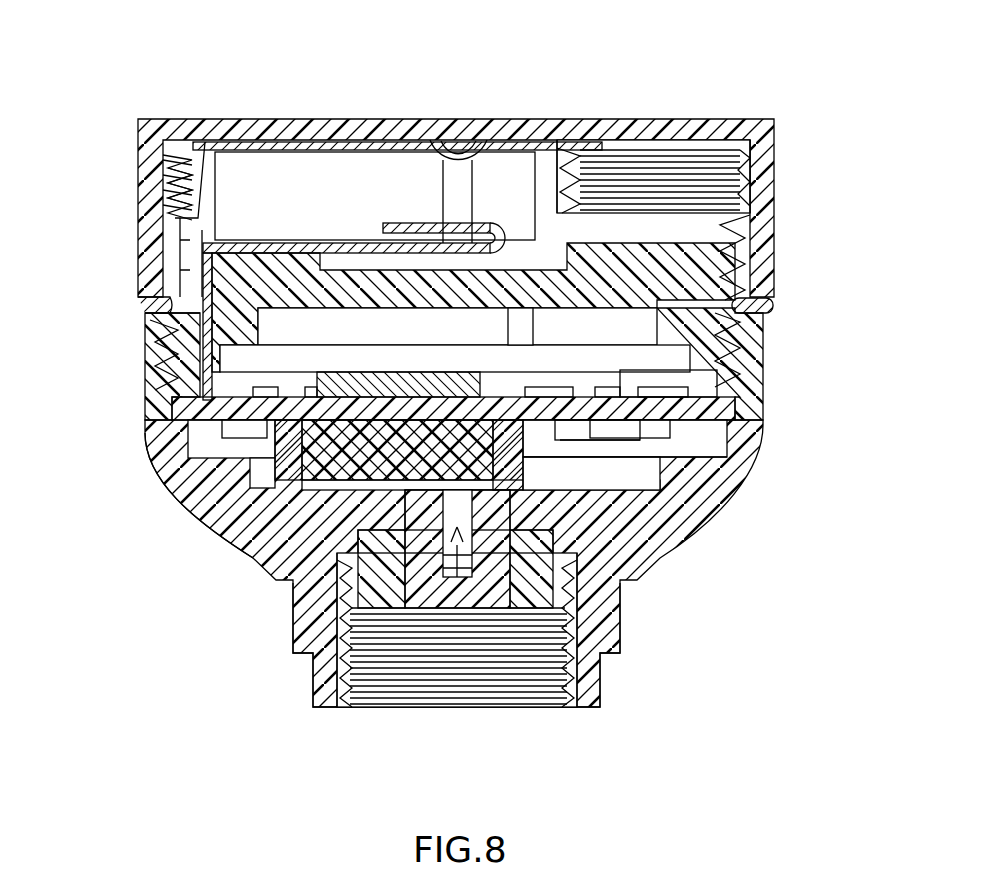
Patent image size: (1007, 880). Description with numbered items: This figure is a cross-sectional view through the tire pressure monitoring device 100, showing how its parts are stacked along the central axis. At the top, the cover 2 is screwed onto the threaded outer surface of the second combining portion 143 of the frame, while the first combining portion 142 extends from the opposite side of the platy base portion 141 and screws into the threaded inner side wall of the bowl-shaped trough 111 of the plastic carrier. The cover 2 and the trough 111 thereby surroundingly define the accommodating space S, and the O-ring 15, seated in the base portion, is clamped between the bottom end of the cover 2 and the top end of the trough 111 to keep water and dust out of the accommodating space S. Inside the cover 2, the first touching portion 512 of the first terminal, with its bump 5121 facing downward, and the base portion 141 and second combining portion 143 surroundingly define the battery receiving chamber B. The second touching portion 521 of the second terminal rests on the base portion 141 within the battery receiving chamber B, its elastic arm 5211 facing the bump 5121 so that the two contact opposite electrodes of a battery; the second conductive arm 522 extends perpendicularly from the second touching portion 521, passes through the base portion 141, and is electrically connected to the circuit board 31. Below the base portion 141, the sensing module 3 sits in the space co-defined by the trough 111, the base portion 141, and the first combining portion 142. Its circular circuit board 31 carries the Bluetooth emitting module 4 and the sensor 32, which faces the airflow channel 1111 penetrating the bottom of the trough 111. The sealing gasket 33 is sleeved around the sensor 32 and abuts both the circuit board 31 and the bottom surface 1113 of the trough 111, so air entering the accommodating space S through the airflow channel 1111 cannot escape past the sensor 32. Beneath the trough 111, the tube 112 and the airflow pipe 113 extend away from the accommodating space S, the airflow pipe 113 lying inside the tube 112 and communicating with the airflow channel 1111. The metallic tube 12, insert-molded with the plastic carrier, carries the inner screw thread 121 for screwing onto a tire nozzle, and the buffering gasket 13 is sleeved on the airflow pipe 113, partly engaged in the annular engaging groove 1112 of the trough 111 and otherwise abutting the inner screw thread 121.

The tire pressure monitoring device 100 is at (180, 30).
The cover 2 is at (635, 118).
The battery receiving chamber B is at (313, 190).
The second touching portion 521 is at (354, 218).
The elastic arm 5211 is at (395, 226).
The first touching portion 512 is at (462, 132).
The bump 5121 is at (464, 228).
The second conductive arm 522 is at (243, 292).
The Bluetooth emitting module 4 is at (454, 369).
The second combining portion 143 is at (172, 224).
The base portion 141 is at (170, 297).
The first combining portion 142 is at (178, 357).
The O-ring 15 is at (775, 305).
The trough 111 is at (757, 358).
The accommodating space S is at (705, 437).
The bottom surface 1113 is at (720, 458).
The sensing module 3 is at (402, 477).
The circuit board 31 is at (185, 406).
The sealing gasket 33 is at (368, 478).
The sensor 32 is at (300, 540).
The engaging groove 1112 is at (556, 542).
The tube 112 is at (605, 610).
The inner screw thread 121 is at (383, 693).
The airflow channel 1111 is at (452, 545).
The airflow pipe 113 is at (497, 572).
The buffering gasket 13 is at (528, 608).
The metallic tube 12 is at (572, 708).